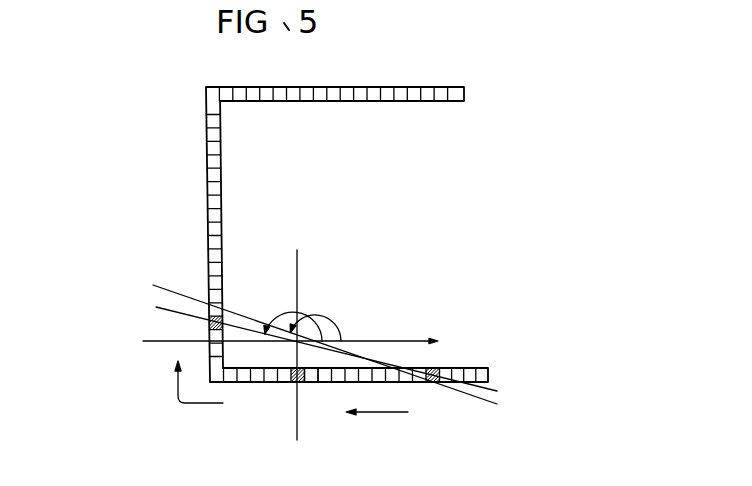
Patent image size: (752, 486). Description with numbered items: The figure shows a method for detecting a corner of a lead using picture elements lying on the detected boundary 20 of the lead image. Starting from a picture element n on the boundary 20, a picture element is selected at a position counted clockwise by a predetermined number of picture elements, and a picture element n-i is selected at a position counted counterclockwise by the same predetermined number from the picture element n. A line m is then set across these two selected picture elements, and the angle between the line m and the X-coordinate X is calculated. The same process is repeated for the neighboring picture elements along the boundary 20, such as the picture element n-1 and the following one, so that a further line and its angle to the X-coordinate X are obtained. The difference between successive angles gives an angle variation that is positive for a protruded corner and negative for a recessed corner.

The boundary 20 is at (186, 165).
The line m is at (164, 307).
The picture element n is at (298, 357).
The sensor element n-1 is at (310, 382).
The picture element n-i is at (433, 384).
The X-coordinate X is at (300, 342).